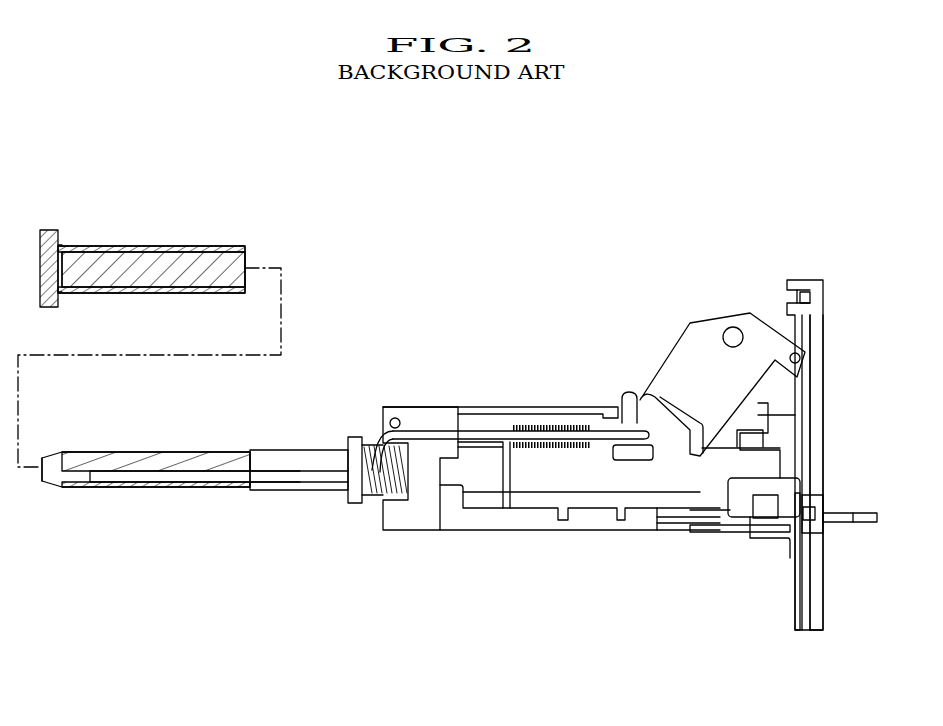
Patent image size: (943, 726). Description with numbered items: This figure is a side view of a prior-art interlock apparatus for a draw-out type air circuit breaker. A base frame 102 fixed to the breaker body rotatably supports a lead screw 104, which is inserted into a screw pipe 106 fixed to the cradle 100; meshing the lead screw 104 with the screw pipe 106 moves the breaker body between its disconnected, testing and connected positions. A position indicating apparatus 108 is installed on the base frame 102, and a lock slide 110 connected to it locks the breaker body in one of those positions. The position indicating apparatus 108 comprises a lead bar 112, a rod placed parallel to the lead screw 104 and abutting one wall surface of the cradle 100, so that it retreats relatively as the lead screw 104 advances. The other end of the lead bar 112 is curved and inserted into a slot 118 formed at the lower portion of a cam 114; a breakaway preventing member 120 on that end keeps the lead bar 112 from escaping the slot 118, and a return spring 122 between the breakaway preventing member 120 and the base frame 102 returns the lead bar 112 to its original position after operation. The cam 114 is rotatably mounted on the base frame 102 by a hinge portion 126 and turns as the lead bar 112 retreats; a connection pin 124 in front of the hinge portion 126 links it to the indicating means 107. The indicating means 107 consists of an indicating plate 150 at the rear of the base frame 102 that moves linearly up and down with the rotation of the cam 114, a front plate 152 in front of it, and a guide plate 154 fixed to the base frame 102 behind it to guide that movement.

The cradle 100 is at (63, 246).
The screw pipe 106 is at (200, 247).
The lead screw 104 is at (188, 455).
The lead bar 112 is at (275, 468).
The position indicating apparatus 108 is at (487, 378).
The base frame 102 is at (417, 407).
The lock slide 110 is at (495, 530).
The return spring 122 is at (546, 425).
The breakaway preventing member 120 is at (616, 462).
The slot 118 is at (697, 458).
The cam 114 is at (680, 358).
The hinge portion 126 is at (732, 327).
The connection pin 124 is at (801, 358).
The indicating means 107 is at (832, 431).
The front plate 152 is at (815, 630).
The indicating plate 150 is at (797, 625).
The guide plate 154 is at (792, 612).